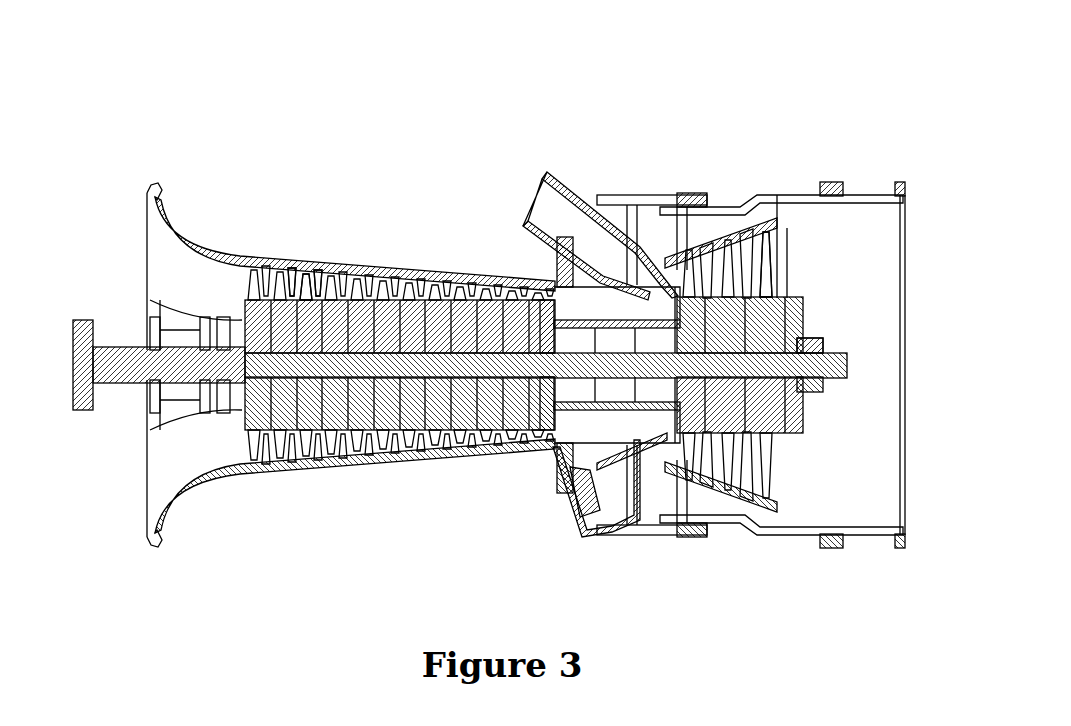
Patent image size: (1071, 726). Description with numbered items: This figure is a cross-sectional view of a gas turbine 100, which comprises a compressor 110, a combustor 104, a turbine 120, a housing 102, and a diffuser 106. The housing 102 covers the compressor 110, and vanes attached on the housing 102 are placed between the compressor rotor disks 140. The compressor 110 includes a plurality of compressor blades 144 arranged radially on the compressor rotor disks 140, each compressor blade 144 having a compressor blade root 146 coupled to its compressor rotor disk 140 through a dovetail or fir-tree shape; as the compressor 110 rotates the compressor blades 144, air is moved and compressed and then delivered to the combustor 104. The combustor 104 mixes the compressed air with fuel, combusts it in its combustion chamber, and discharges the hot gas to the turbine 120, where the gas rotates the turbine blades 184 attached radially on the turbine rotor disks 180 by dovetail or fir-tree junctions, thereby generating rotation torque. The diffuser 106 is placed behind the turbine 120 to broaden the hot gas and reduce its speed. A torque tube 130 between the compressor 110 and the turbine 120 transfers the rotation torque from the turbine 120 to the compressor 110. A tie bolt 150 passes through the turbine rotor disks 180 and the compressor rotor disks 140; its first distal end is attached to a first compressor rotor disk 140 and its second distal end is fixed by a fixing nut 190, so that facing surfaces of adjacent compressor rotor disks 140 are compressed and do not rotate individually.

The gas turbine 100 is at (862, 29).
The housing 102 is at (396, 248).
The combustor 104 is at (550, 155).
The diffuser 106 is at (869, 170).
The compressor 110 is at (208, 412).
The turbine 120 is at (668, 450).
The torque tube 130 is at (555, 295).
The compressor rotor disk 140 is at (296, 262).
The compressor blade 144 is at (300, 262).
The compressor blade root 146 is at (316, 262).
The tie bolt 150 is at (158, 414).
The turbine rotor disk 180 is at (780, 285).
The turbine blade 184 is at (777, 195).
The fixing nut 190 is at (793, 343).